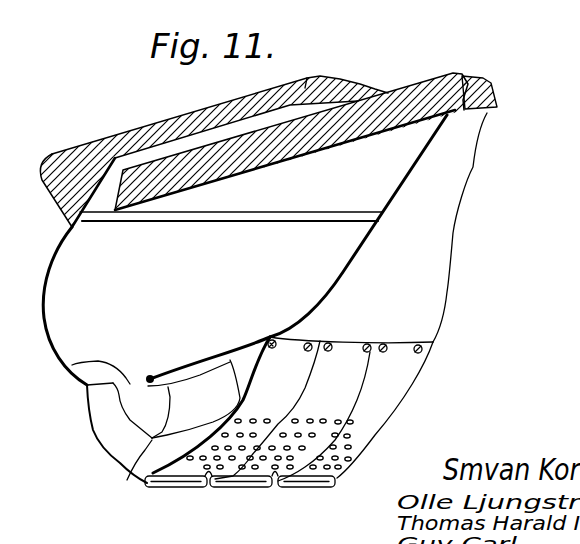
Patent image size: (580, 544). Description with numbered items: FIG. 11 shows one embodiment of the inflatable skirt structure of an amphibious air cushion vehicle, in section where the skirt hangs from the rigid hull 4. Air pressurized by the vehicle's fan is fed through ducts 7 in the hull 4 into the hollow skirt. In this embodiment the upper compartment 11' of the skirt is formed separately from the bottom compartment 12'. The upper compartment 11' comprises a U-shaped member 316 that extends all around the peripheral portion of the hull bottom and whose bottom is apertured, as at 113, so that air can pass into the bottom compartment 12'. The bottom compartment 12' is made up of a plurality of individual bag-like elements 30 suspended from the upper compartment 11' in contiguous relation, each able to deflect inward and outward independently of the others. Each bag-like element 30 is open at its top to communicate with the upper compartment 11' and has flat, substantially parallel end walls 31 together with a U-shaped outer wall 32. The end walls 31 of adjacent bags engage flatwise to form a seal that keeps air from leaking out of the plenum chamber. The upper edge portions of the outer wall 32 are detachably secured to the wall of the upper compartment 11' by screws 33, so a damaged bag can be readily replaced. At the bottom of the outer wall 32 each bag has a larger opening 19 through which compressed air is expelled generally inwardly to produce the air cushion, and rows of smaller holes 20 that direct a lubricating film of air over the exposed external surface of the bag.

The hull 4 is at (70, 148).
The ducts 7 is at (200, 138).
The upper compartment 11' is at (245, 294).
The bottom compartment 12' is at (176, 399).
The apertures 113 is at (72, 365).
The bag-like elements 30 is at (117, 444).
The end walls 31 is at (110, 425).
The outer wall 32 is at (110, 459).
The screws 33 is at (418, 352).
The U-shaped member 316 is at (427, 268).
The smaller holes 20 is at (200, 459).
The larger opening 19 is at (162, 489).